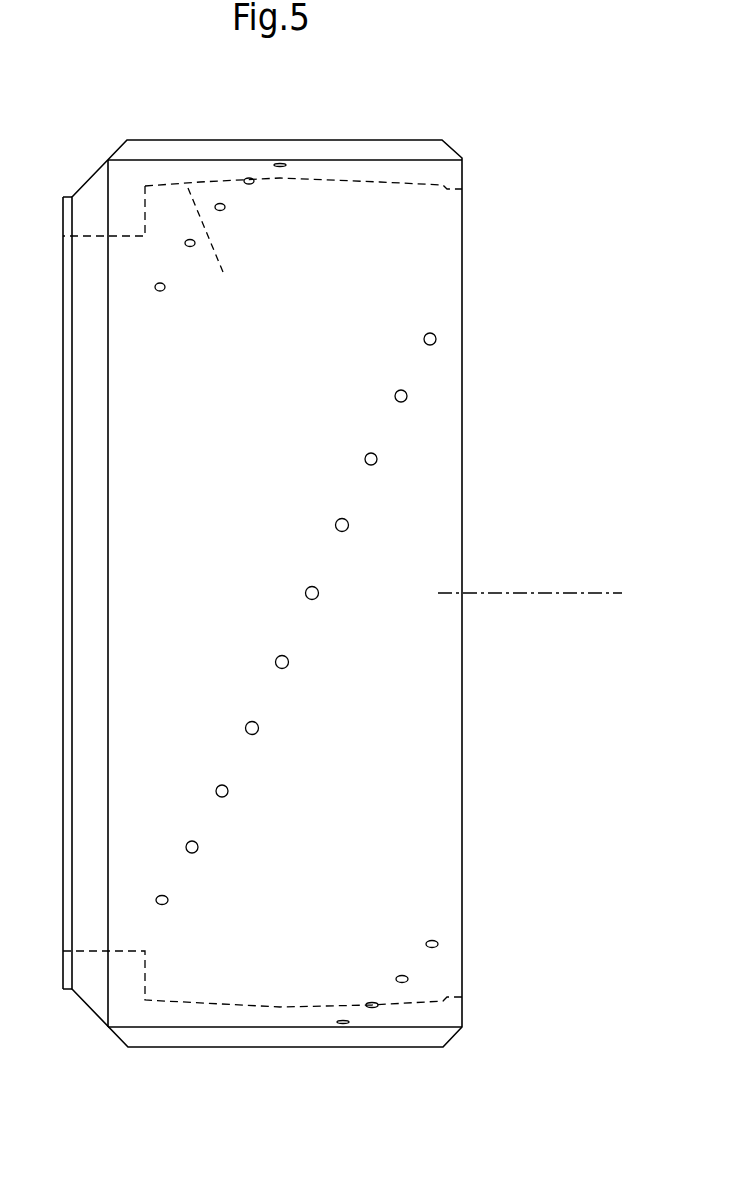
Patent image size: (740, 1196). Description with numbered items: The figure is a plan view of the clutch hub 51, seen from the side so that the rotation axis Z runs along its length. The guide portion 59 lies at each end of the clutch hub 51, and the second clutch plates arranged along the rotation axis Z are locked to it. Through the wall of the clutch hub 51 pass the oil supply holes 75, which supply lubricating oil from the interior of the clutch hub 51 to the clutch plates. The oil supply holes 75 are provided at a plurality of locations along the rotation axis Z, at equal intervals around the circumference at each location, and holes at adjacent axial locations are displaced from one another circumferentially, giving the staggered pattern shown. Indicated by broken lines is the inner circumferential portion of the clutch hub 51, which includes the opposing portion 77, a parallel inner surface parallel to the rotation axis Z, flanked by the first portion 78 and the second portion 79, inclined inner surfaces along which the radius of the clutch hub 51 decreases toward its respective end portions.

The clutch hub 51 is at (408, 769).
The guide portion 59 is at (162, 148).
The oil supply holes 75 is at (222, 211).
The opposing portion 77 is at (285, 180).
The first portion 78 is at (188, 186).
The second portion 79 is at (379, 182).
The rotation axis Z is at (541, 595).